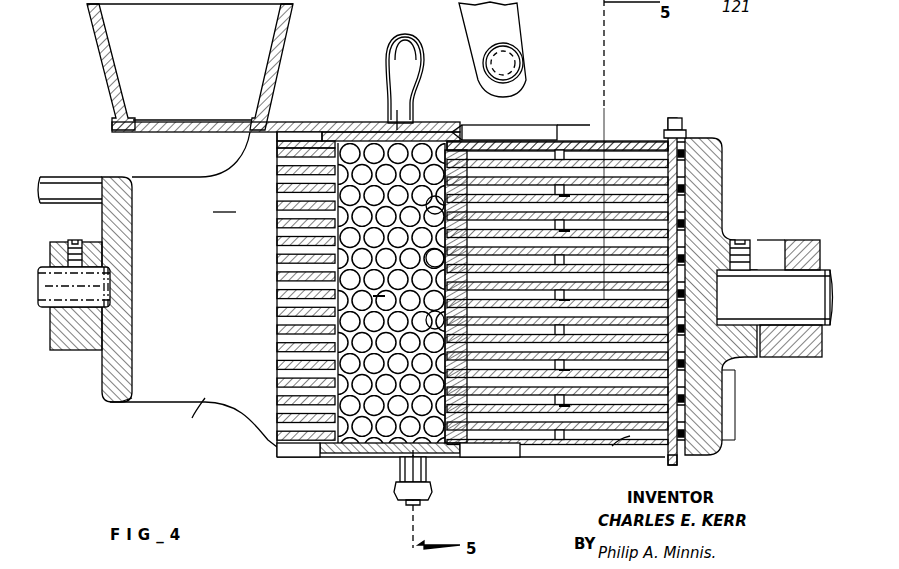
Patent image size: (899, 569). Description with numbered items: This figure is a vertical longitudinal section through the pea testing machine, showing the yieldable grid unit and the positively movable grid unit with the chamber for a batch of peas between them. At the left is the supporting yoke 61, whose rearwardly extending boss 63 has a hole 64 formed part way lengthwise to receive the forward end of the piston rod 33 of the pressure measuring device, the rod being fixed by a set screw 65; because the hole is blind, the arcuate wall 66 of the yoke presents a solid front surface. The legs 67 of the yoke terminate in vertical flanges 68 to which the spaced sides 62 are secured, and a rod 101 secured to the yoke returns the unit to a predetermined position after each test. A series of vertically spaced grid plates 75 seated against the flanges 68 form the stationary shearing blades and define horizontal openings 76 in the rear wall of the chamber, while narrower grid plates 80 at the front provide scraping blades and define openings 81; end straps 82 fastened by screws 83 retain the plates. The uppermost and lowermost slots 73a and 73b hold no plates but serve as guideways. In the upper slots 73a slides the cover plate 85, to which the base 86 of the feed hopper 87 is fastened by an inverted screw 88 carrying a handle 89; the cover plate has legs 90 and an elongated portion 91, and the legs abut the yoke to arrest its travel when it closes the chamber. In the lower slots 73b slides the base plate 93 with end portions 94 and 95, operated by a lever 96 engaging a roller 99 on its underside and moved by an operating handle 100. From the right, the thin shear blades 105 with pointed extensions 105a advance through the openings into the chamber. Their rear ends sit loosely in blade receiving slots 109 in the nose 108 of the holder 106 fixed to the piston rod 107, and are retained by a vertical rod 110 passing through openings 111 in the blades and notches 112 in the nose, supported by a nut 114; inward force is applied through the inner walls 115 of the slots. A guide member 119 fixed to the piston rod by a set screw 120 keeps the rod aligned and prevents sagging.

The piston rod 33 is at (48, 276).
The supporting yoke 61 is at (112, 401).
The sides 62 is at (572, 125).
The boss 63 is at (85, 336).
The hole 64 is at (95, 268).
The set screw 65 is at (79, 250).
The arcuate wall 66 is at (132, 300).
The legs 67 is at (224, 203).
The flanges 68 is at (282, 336).
The uppermost slots 73a is at (512, 113).
The lowermost slots 73b is at (270, 446).
The grid plates 75 is at (285, 394).
The horizontal openings 76 is at (285, 282).
The grid plates 80 is at (422, 202).
The horizontal openings 81 is at (422, 317).
The end straps 82 is at (560, 158).
The screws 83 is at (608, 152).
The cover plate 85 is at (440, 130).
The base of feed hopper 86 is at (330, 126).
The feed hopper 87 is at (190, 55).
The inverted screw 88 is at (391, 293).
The handle 89 is at (398, 52).
The legs 90 is at (283, 128).
The elongated portion 91 is at (525, 135).
The base plate 93 is at (372, 453).
The end portions 94 is at (302, 458).
The end portion 95 is at (516, 458).
The lever 96 is at (396, 488).
The roller 99 is at (422, 486).
The operating handle 100 is at (523, 63).
The rod 101 is at (64, 185).
The shear blades 105 is at (663, 142).
The pointed extensions 105a is at (418, 246).
The shear blade holder 106 is at (712, 165).
The piston rod 107 is at (795, 304).
The nose 108 is at (672, 135).
The blade receiving slots 109 is at (688, 186).
The rod 110 is at (680, 122).
The openings 111 is at (688, 216).
The notches 112 is at (686, 456).
The nut 114 is at (686, 140).
The inner walls of slots 115 is at (700, 386).
The guide member 119 is at (812, 244).
The set screw 120 is at (785, 248).